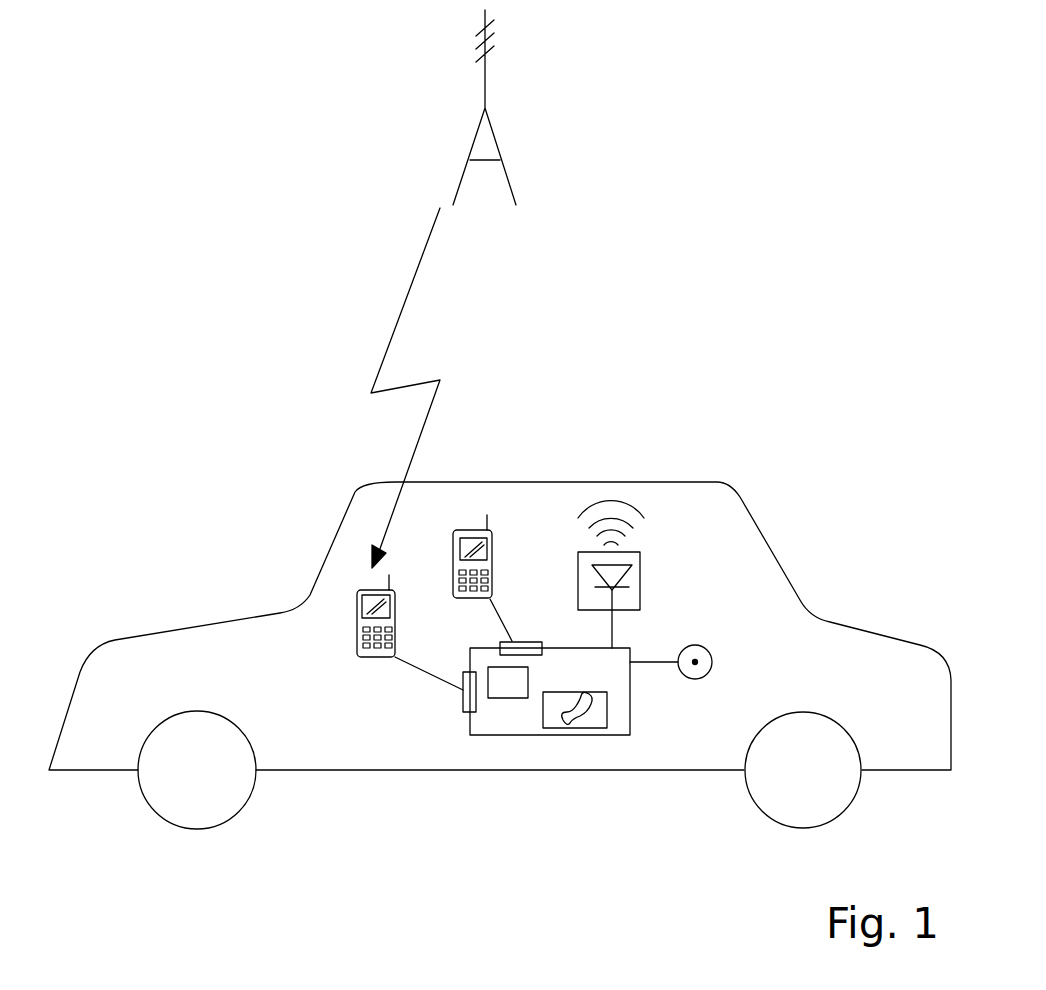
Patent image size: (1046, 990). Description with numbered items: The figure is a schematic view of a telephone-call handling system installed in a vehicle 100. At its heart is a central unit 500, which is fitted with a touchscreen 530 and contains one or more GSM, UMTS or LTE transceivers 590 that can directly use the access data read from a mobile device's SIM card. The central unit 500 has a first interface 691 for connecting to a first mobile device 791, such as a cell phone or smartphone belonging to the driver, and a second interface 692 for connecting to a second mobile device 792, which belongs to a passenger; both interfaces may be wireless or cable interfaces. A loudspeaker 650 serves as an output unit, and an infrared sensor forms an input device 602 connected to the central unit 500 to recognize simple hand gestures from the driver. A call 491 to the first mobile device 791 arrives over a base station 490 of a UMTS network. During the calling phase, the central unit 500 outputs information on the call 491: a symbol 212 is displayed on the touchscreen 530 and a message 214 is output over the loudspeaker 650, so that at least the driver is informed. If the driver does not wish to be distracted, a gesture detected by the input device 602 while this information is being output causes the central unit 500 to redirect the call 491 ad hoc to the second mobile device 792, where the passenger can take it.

The vehicle 100 is at (757, 532).
The base station 490 is at (485, 90).
The call 491 is at (413, 285).
The second mobile device 792 is at (480, 553).
The first mobile device 791 is at (372, 657).
The central unit 500 is at (493, 735).
The second interface 692 is at (530, 642).
The first interface 691 is at (468, 727).
The transceiver 590 is at (493, 668).
The touchscreen 530 is at (544, 710).
The symbol 212 is at (590, 713).
The loudspeaker 650 is at (637, 595).
The message 214 is at (641, 523).
The input device 602 is at (716, 660).